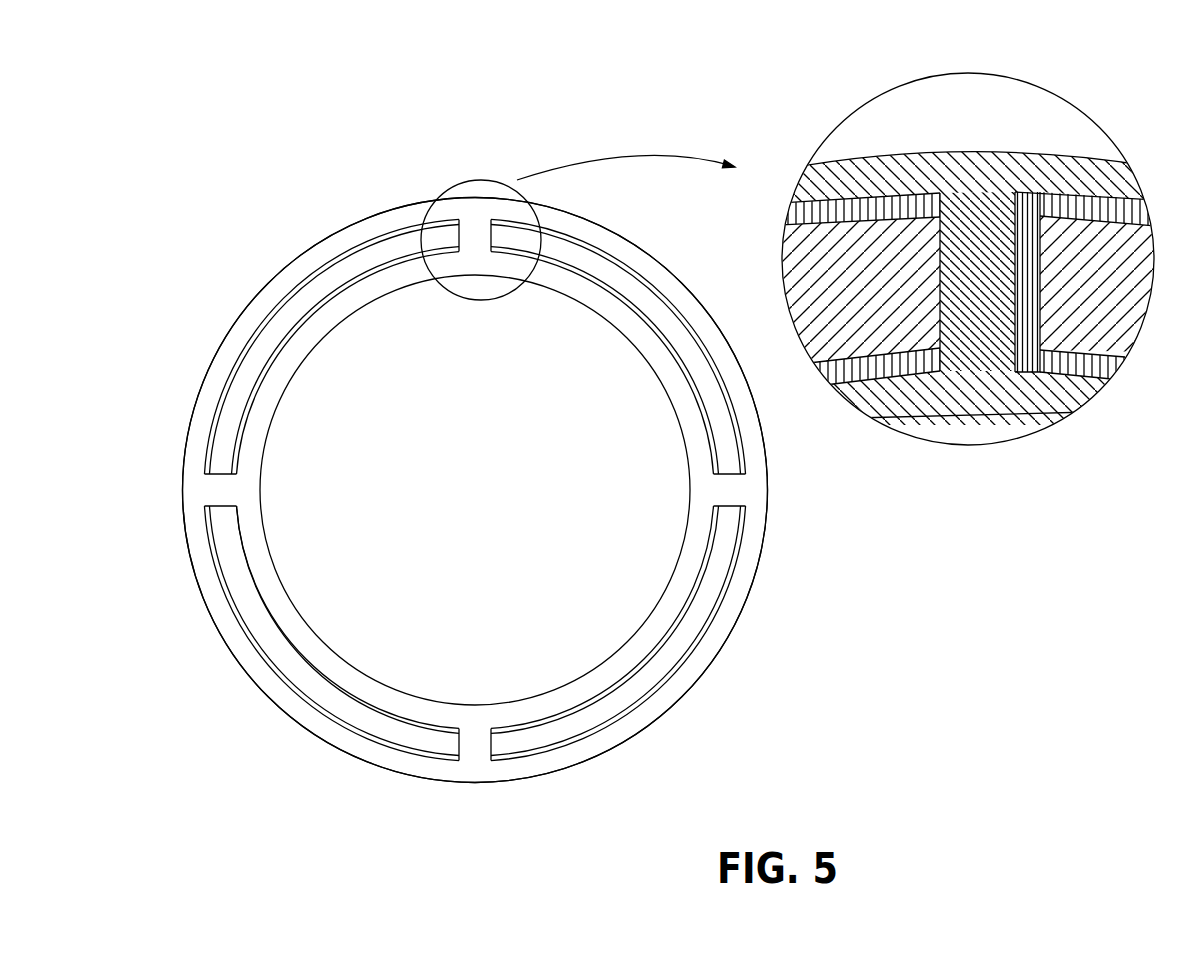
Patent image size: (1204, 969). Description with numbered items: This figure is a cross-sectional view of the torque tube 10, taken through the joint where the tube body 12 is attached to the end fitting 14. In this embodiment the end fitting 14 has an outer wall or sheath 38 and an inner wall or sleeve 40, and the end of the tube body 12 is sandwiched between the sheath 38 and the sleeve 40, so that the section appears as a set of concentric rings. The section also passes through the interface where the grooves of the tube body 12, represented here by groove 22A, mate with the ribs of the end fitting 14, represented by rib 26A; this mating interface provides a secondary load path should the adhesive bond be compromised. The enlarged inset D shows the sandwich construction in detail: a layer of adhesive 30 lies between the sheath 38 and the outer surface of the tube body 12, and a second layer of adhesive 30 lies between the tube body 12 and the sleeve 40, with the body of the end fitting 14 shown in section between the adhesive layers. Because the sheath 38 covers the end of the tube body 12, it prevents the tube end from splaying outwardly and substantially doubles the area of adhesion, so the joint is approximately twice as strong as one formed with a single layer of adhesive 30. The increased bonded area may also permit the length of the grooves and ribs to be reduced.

The torque tube 10 is at (316, 216).
The tube body 12 is at (353, 270).
The end fitting 14 is at (318, 356).
The groove 22A is at (769, 169).
The rib 26A is at (478, 177).
The adhesive 30 is at (243, 405).
The sheath 38 is at (222, 342).
The sleeve 40 is at (248, 453).
The inset D is at (795, 185).